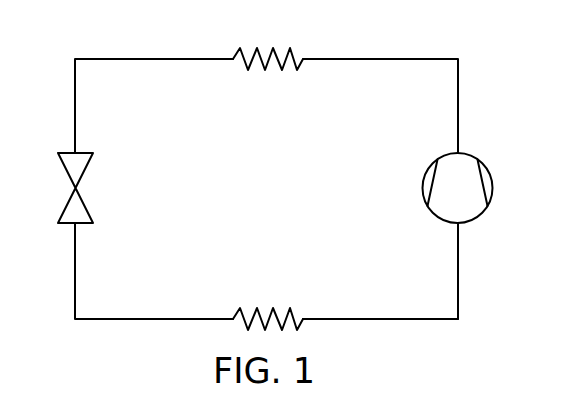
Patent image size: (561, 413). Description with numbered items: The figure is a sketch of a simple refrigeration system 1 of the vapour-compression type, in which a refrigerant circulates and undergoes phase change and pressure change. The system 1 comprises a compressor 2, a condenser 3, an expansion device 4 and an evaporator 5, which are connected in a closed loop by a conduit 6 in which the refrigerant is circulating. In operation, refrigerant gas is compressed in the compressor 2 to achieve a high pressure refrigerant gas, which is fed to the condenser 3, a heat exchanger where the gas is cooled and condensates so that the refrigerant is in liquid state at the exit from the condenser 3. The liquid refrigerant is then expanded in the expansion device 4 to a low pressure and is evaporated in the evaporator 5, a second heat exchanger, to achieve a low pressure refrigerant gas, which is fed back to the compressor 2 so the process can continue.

The refrigeration system 1 is at (487, 64).
The compressor 2 is at (483, 163).
The condenser 3 is at (290, 48).
The expansion device 4 is at (63, 163).
The evaporator 5 is at (290, 308).
The conduit 6 is at (367, 319).